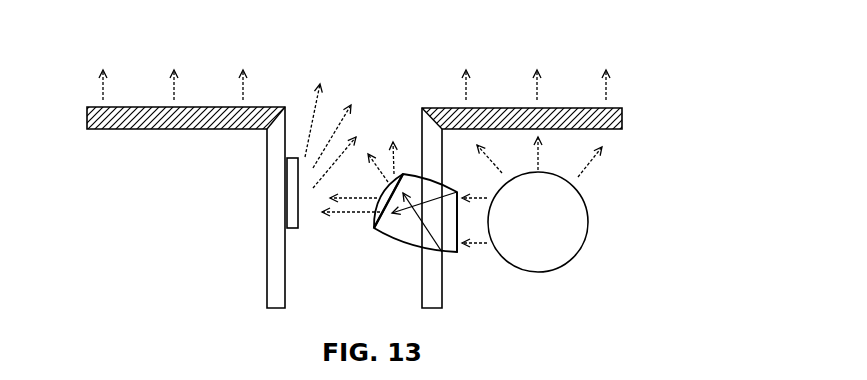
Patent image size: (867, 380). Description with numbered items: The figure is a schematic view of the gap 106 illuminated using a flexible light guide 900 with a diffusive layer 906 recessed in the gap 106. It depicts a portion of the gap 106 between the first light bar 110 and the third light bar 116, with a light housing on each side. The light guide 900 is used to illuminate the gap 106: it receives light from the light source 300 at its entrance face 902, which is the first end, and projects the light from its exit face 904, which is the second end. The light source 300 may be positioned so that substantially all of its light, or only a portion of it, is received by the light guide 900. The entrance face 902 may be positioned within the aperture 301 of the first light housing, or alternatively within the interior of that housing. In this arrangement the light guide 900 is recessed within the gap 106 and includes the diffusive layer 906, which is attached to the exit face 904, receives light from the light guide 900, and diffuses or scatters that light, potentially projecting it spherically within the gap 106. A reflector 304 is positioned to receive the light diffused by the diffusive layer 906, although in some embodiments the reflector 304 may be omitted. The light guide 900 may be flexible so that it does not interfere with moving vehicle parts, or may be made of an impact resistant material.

The gap 106 is at (361, 308).
The first light bar 110 is at (102, 121).
The third light bar 116 is at (608, 114).
The light source 300 is at (520, 232).
The aperture 301 is at (433, 256).
The reflector 304 is at (290, 218).
The light guide 900 is at (413, 232).
The entrance face 902 is at (464, 228).
The exit face 904 is at (393, 176).
The diffusive layer 906 is at (377, 212).